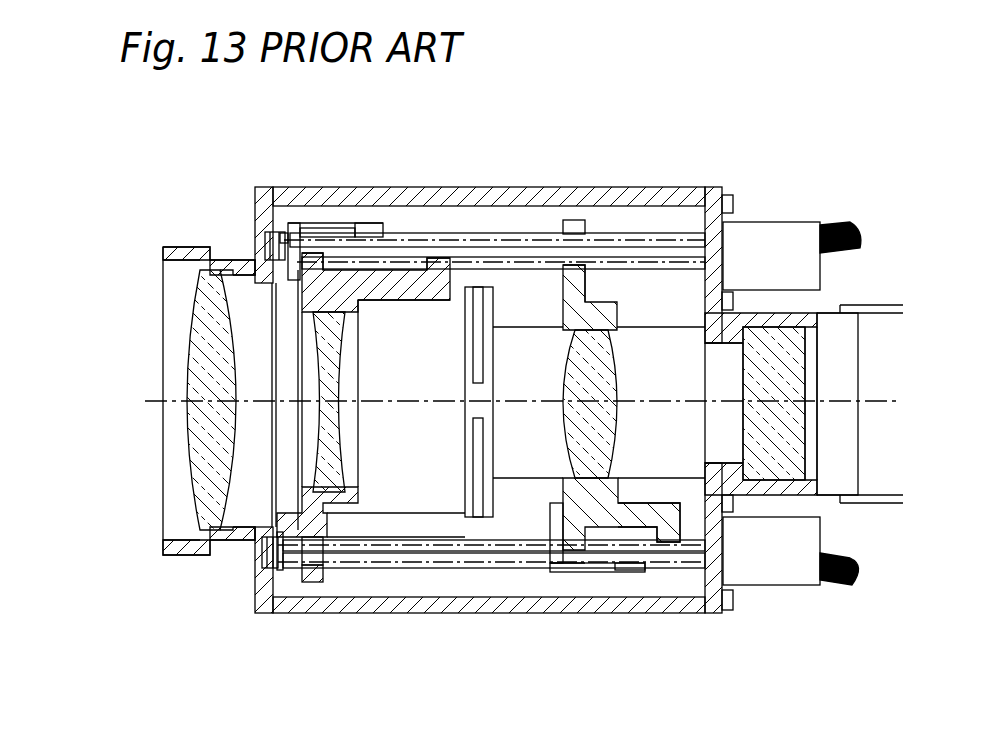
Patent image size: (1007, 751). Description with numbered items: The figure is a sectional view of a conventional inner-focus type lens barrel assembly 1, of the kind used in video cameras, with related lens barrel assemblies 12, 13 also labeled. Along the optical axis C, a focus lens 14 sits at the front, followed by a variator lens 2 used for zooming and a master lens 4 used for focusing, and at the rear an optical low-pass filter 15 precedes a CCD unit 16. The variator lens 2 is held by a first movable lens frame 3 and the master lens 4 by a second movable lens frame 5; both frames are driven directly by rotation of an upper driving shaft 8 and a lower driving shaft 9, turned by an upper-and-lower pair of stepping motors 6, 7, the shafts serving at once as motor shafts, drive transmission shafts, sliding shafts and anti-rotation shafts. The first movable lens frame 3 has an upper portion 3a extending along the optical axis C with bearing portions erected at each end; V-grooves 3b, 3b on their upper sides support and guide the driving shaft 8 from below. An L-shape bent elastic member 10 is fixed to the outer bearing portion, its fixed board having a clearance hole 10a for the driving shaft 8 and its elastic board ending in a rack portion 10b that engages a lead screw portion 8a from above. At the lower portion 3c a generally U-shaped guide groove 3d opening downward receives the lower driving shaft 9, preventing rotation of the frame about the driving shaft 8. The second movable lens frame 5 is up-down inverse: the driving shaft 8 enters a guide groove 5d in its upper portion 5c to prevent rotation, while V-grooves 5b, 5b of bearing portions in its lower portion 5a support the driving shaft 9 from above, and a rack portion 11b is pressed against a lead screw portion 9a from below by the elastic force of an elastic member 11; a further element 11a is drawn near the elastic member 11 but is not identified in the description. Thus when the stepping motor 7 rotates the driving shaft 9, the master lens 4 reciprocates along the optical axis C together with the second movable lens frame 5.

The lens barrel assembly 1 is at (485, 613).
The variator lens 2 is at (335, 430).
The first movable lens frame 3 is at (356, 388).
The upper portion 3a is at (388, 301).
The V-grooves 3b is at (305, 252).
The lower portion 3c is at (330, 613).
The guide groove 3d is at (307, 613).
The master lens 4 is at (593, 372).
The second movable lens frame 5 is at (632, 412).
The lower portion 5a is at (637, 515).
The V-grooves 5b is at (586, 600).
The upper portion 5c is at (562, 291).
The guide groove 5d is at (588, 225).
The stepping motor 6 is at (768, 232).
The stepping motor 7 is at (775, 570).
The driving shaft 8 is at (470, 233).
The lead screw portion 8a is at (512, 257).
The driving shaft 9 is at (419, 600).
The lead screw portion 9a is at (380, 613).
The elastic member 10 is at (322, 228).
The clearance hole 10a is at (286, 222).
The rack portion 10b is at (364, 222).
The elastic member 11 is at (610, 634).
The sensor portion 11a is at (546, 598).
The rack portion 11b is at (653, 610).
The lens barrel assembly 12 is at (196, 248).
The lens barrel assembly 13 is at (560, 190).
The focus lens 14 is at (195, 478).
The optical low-pass filter 15 is at (790, 380).
The CCD unit 16 is at (840, 452).
The optical axis C is at (456, 400).